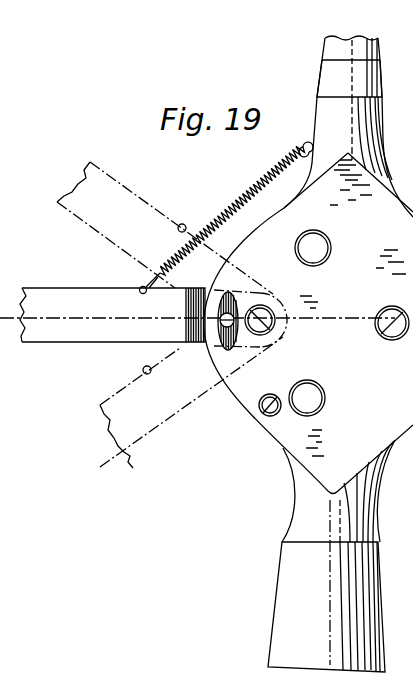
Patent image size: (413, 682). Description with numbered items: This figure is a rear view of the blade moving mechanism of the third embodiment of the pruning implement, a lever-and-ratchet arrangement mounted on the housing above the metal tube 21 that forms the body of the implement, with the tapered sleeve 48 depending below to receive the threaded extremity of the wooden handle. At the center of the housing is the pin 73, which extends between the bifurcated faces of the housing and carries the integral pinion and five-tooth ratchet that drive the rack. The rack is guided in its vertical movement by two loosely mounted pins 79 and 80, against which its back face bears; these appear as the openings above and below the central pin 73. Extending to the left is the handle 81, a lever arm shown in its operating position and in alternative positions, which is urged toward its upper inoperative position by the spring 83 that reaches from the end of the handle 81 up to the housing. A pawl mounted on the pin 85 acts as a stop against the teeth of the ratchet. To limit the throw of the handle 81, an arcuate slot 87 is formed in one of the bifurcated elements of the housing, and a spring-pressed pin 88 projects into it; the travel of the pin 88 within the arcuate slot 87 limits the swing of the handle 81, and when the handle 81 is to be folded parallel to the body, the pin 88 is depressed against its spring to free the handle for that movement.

The metal tube 21 is at (373, 52).
The tapered sleeve 48 is at (372, 582).
The pin 73 is at (287, 330).
The loosely mounted pin 79 is at (325, 245).
The loosely mounted pin 80 is at (320, 398).
The handle 81 is at (58, 293).
The spring 83 is at (246, 197).
The pin 85 is at (265, 416).
The arcuate slot 87 is at (232, 292).
The pin 88 is at (224, 327).